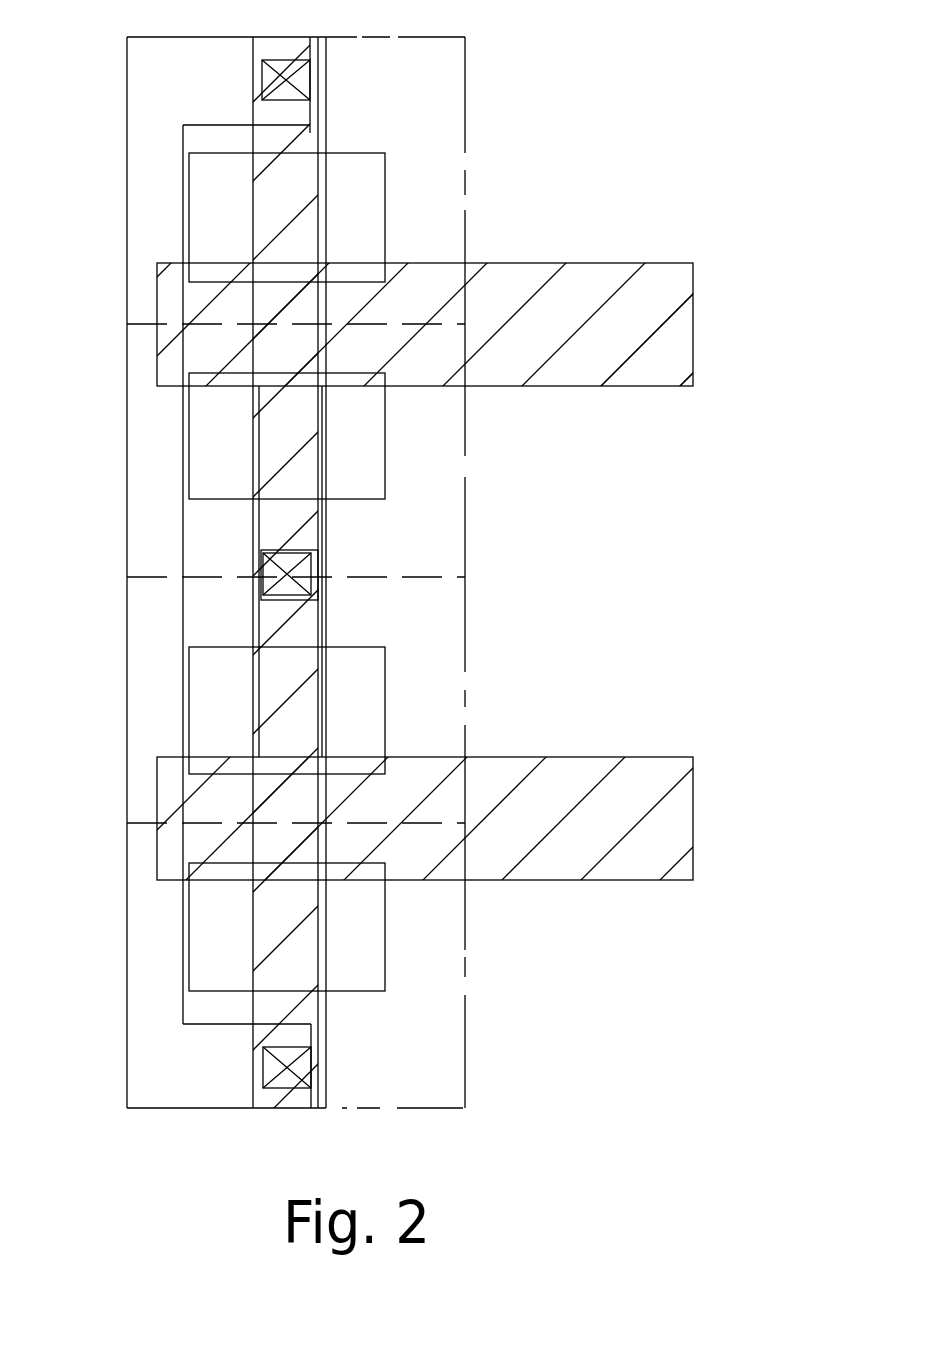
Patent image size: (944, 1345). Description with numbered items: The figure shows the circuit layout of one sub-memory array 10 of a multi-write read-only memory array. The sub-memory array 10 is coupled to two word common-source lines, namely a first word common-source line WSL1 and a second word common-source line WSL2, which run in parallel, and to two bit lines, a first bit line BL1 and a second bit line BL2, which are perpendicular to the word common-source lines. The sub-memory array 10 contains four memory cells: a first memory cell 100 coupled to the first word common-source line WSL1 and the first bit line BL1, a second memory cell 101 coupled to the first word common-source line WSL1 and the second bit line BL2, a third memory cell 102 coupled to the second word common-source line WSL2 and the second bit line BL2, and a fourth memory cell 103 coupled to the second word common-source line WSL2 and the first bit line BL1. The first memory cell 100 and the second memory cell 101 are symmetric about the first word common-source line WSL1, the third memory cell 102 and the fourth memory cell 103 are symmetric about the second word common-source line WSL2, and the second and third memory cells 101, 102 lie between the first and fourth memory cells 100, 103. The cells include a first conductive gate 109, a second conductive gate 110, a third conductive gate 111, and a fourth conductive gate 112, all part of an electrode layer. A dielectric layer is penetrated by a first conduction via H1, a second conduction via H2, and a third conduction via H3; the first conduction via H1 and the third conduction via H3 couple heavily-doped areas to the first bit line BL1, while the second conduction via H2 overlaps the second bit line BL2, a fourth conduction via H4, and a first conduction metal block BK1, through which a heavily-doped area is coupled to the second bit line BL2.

The first memory cell 100 is at (465, 55).
The second memory cell 101 is at (465, 509).
The third memory cell 102 is at (465, 622).
The fourth memory cell 103 is at (465, 1107).
The sub-memory array 10 is at (602, 1024).
The first bit line BL1 is at (135, 83).
The second bit line BL2 is at (327, 65).
The first conduction metal block BK1 is at (258, 525).
The first word common-source line WSL1 is at (560, 263).
The second word common-source line WSL2 is at (559, 764).
The first conductive gate 109 is at (377, 163).
The second conductive gate 110 is at (373, 437).
The third conductive gate 111 is at (377, 710).
The fourth conductive gate 112 is at (378, 925).
The first conduction via H1 is at (308, 88).
The second conduction via H2 is at (318, 562).
The third conduction via H3 is at (305, 1067).
The fourth conduction via H4 is at (318, 597).